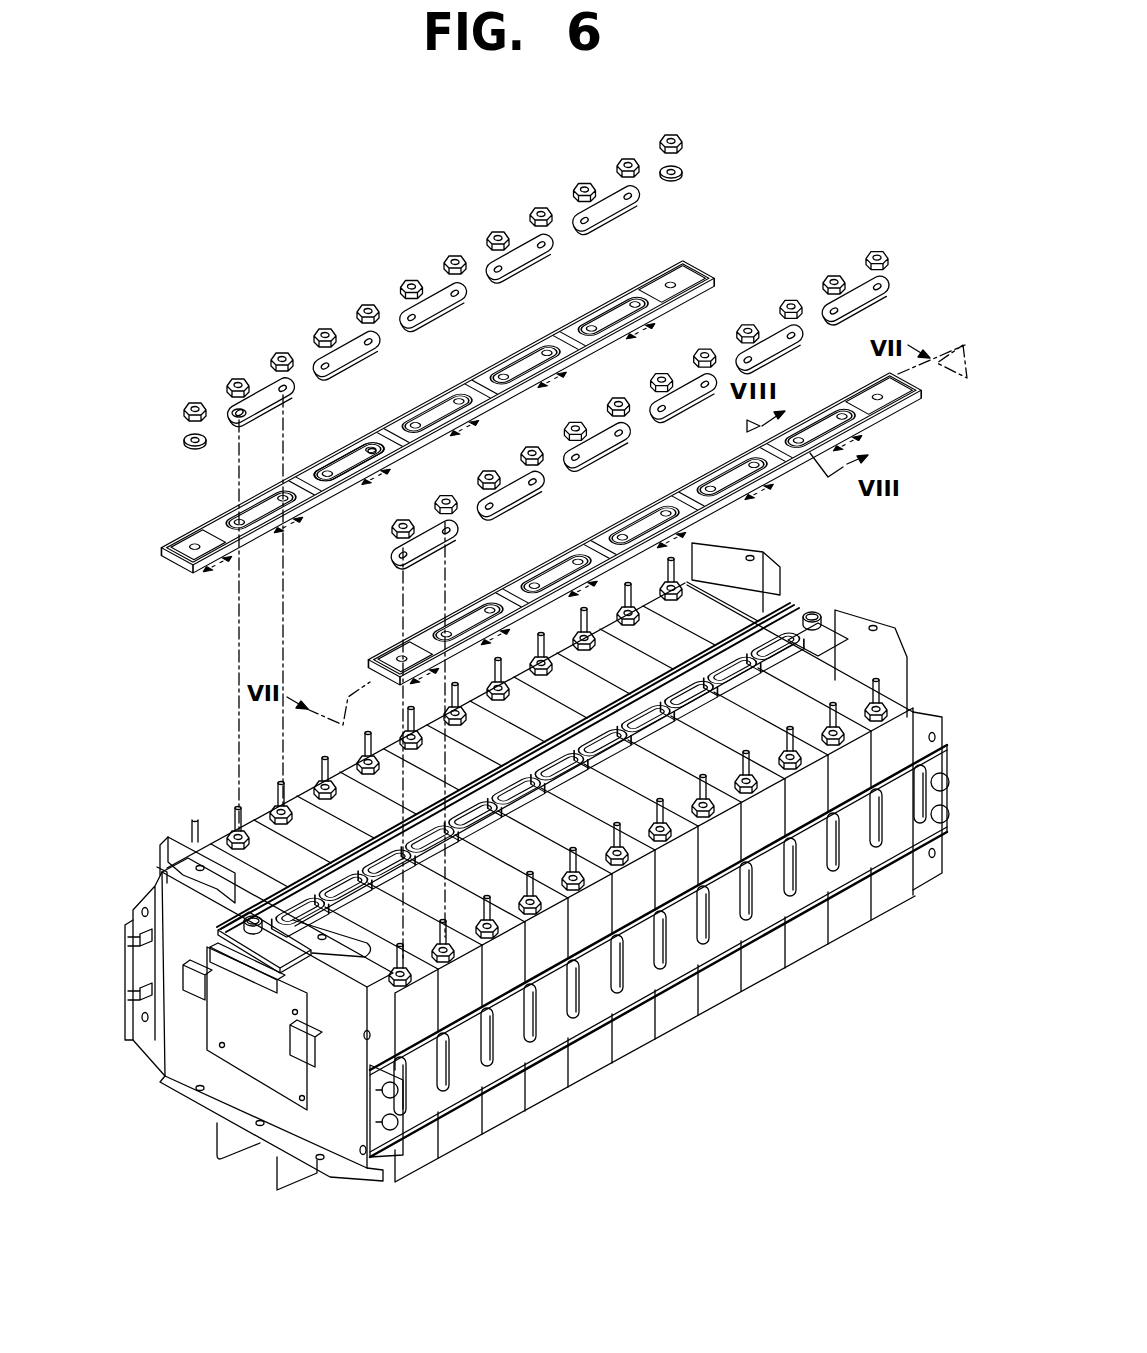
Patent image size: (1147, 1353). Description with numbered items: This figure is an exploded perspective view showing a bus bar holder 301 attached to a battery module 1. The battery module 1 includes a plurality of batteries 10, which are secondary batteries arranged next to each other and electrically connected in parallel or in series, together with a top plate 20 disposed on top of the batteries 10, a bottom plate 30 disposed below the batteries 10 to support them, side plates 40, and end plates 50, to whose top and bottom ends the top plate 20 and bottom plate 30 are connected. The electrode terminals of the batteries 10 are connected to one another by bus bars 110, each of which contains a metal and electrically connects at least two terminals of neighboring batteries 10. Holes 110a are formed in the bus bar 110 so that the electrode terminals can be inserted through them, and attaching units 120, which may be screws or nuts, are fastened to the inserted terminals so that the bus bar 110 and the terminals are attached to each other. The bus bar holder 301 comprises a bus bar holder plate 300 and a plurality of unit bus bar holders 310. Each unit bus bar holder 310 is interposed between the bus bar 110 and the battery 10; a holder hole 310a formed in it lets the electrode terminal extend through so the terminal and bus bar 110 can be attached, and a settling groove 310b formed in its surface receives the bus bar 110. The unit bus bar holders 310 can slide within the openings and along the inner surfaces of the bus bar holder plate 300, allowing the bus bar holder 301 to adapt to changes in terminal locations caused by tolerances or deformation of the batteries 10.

The battery module 1 is at (865, 568).
The batteries 10 is at (542, 1090).
The top plate 20 is at (240, 935).
The bottom plate 30 is at (233, 1143).
The side plates 40 is at (468, 1082).
The end plates 50 is at (218, 1062).
The bus bar 110 is at (268, 395).
The holes 110a is at (238, 413).
The attaching units 120 is at (238, 380).
The bus bar holder plate 300 is at (183, 572).
The bus bar holder 301 is at (735, 184).
The unit bus bar holder 310 is at (323, 485).
The holder hole 310a is at (370, 452).
The settling groove 310b is at (343, 463).